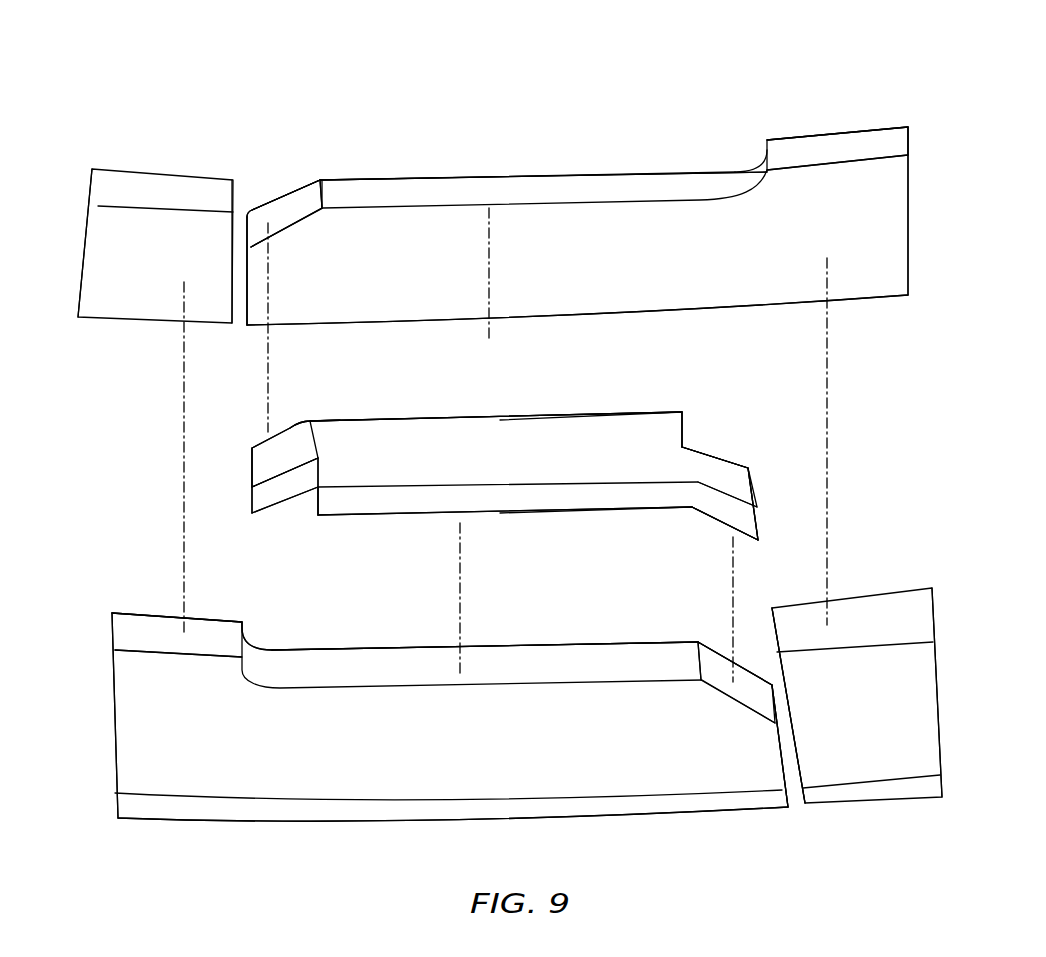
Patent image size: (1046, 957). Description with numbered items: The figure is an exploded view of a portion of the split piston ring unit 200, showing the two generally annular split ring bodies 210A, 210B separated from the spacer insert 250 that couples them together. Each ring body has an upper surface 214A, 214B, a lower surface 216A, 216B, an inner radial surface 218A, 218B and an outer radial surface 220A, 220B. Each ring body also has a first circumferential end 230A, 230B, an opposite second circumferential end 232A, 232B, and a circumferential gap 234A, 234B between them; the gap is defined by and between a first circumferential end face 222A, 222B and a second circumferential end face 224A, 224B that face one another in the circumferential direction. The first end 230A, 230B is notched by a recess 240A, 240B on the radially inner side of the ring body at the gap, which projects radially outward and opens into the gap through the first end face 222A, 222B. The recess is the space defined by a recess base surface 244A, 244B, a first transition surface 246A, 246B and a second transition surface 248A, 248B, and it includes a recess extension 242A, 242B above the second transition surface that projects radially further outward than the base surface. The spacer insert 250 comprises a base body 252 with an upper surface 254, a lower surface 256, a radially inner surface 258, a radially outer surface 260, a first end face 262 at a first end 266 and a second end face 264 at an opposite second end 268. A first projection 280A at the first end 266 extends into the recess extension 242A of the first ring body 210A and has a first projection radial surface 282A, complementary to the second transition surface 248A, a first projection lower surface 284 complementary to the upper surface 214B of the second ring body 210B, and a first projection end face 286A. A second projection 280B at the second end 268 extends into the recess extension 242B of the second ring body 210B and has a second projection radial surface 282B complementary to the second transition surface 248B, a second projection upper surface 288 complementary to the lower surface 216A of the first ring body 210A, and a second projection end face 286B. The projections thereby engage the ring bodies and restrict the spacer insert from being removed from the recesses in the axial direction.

The split piston ring unit 200 is at (57, 133).
The first ring body 210A is at (160, 830).
The second ring body 210B is at (860, 310).
The upper surface 214A is at (137, 700).
The upper surface 214B is at (878, 185).
The lower surface 216A is at (132, 610).
The lower surface 216B is at (802, 133).
The inner radial surface 218A is at (123, 633).
The inner radial surface 218B is at (857, 143).
The outer radial surface 220A is at (143, 820).
The outer radial surface 220B is at (880, 303).
The first circumferential end face 222A is at (857, 714).
The first circumferential end face 222B is at (247, 294).
The second circumferential end face 224A is at (890, 810).
The second circumferential end face 224B is at (237, 268).
The first circumferential end 230A is at (767, 815).
The first circumferential end 230B is at (279, 333).
The second circumferential end 232A is at (848, 807).
The second circumferential end 232B is at (122, 325).
The circumferential gap 234A is at (795, 808).
The circumferential gap 234B is at (237, 328).
The recess 240A is at (628, 640).
The recess 240B is at (358, 174).
The recess extension 242A is at (755, 662).
The recess extension 242B is at (266, 196).
The recess base surface 244A is at (310, 655).
The recess base surface 244B is at (645, 180).
The first transition surface 246A is at (257, 653).
The first transition surface 246B is at (740, 178).
The second transition surface 248A is at (713, 660).
The second transition surface 248B is at (293, 212).
The spacer insert 250 is at (248, 432).
The base body 252 is at (543, 418).
The upper surface 254 is at (578, 503).
The lower surface 256 is at (430, 418).
The radially inner surface 258 is at (615, 440).
The radially outer surface 260 is at (652, 512).
The first end face 262 is at (687, 432).
The second end face 264 is at (312, 506).
The first end 266 is at (682, 397).
The second end 268 is at (318, 413).
The first projection 280A is at (737, 473).
The second projection 280B is at (282, 447).
The first projection radial surface 282A is at (749, 542).
The second projection radial surface 282B is at (270, 513).
The first projection lower surface 284 is at (723, 453).
The first projection end face 286A is at (763, 517).
The second projection end face 286B is at (247, 468).
The second projection upper surface 288 is at (263, 492).